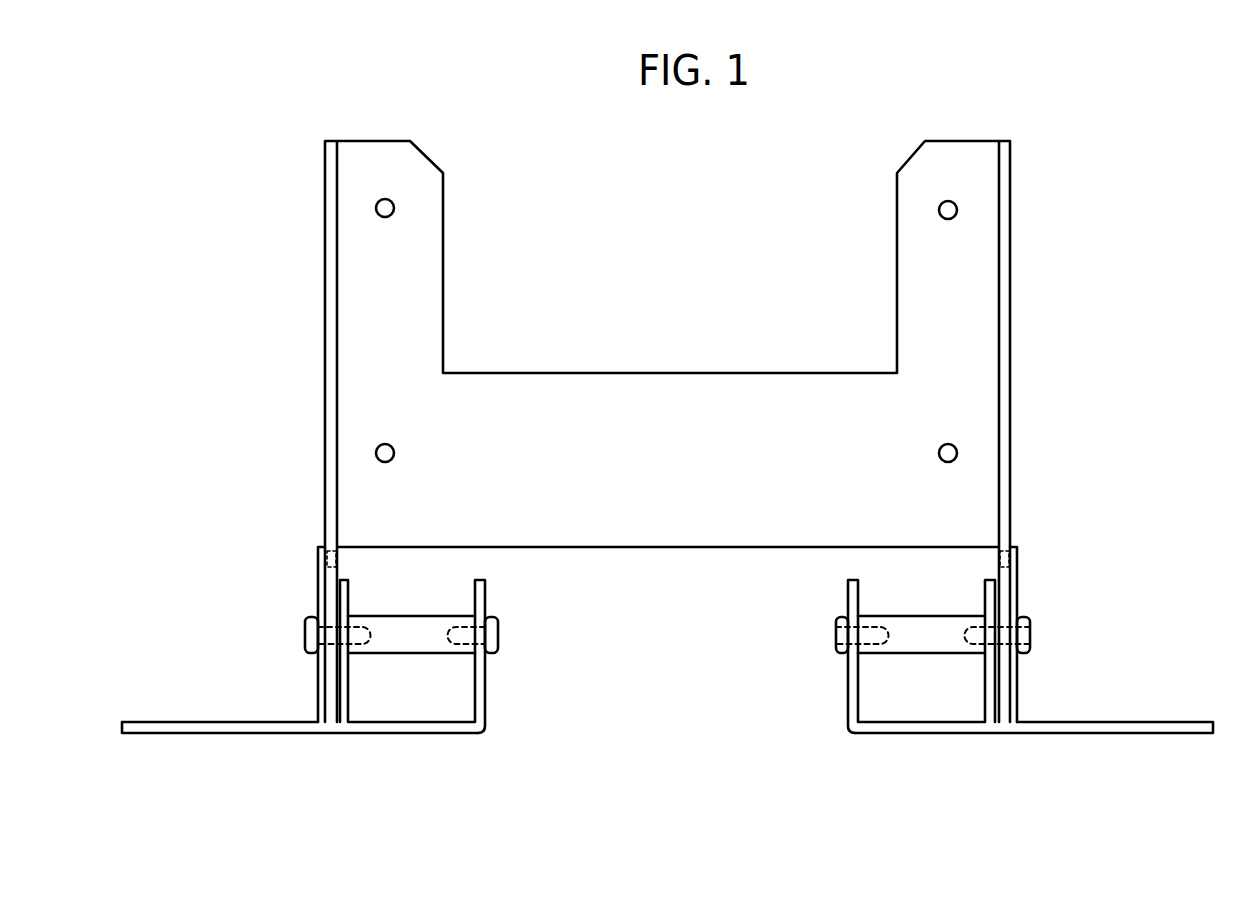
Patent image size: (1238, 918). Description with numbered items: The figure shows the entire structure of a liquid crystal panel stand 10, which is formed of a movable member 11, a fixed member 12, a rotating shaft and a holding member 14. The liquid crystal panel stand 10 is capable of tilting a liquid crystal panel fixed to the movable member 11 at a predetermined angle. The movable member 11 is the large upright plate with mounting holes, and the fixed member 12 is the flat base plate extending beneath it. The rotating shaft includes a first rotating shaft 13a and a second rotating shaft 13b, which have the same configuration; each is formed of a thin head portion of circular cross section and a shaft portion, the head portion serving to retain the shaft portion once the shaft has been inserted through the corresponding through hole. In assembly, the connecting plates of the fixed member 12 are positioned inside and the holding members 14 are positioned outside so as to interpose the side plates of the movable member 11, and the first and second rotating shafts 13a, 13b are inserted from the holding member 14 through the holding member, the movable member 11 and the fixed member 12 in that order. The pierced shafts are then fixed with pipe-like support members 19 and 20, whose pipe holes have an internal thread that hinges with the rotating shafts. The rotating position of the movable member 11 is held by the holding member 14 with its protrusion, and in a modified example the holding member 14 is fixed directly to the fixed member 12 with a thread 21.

The liquid crystal panel stand 10 is at (133, 805).
The movable member 11 is at (897, 208).
The fixed member 12 is at (1050, 733).
The first rotating shaft 13a is at (362, 653).
The second rotating shaft 13b is at (977, 653).
The holding member 14 is at (1018, 577).
The support member 19 is at (415, 653).
The support member 20 is at (902, 653).
The thread 21 is at (498, 634).